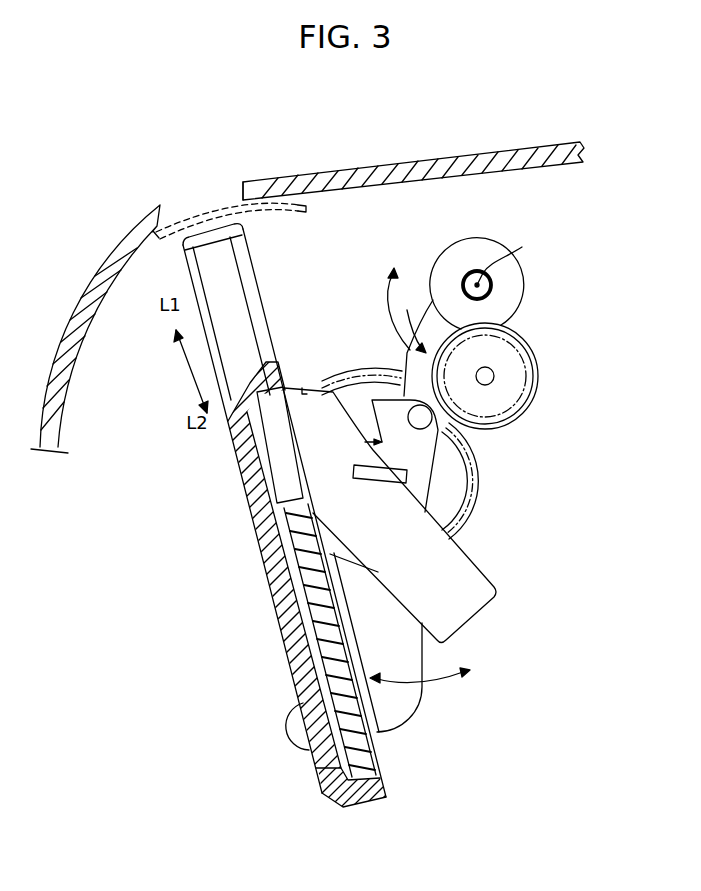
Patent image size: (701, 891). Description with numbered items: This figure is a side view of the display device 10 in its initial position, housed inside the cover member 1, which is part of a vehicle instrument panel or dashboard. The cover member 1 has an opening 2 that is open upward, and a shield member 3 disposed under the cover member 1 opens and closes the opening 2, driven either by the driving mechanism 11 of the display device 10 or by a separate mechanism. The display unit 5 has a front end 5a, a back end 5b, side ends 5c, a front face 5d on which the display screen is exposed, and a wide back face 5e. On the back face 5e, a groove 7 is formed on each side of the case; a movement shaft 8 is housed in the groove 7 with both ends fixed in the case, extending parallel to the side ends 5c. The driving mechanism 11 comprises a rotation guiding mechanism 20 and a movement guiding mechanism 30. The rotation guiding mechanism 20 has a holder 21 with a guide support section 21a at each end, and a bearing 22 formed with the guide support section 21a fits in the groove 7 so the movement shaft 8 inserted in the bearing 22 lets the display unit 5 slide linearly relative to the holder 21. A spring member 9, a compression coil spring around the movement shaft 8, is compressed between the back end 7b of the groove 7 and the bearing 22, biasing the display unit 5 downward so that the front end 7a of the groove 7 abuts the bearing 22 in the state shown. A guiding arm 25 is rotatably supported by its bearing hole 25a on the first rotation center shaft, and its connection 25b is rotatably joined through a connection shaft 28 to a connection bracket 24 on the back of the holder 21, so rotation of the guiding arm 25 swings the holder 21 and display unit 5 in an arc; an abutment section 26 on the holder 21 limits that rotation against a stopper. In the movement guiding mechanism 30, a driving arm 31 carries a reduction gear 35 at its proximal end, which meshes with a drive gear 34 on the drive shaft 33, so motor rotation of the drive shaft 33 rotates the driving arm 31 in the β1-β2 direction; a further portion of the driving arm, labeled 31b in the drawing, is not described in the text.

The cover member 1 is at (457, 162).
The opening 2 is at (243, 184).
The shield member 3 is at (302, 213).
The display unit 5 is at (268, 506).
The front end 5a is at (208, 230).
The back end 5b is at (369, 800).
The side ends 5c is at (266, 348).
The front face 5d is at (190, 285).
The back face 5e is at (262, 273).
The groove 7 is at (350, 585).
The front end of the groove 7a is at (245, 410).
The back end of the groove 7b is at (340, 775).
The movement shaft 8 is at (283, 558).
The spring member 9 is at (297, 620).
The display device 10 is at (444, 488).
The driving mechanism 11 is at (521, 388).
The rotation guiding mechanism 20 is at (377, 347).
The holder 21 is at (409, 492).
The guide support section 21a is at (308, 410).
The bearing 22 is at (283, 483).
The connection bracket 24 is at (426, 490).
The guiding arm 25 is at (495, 265).
The bearing hole 25a is at (492, 292).
The connection 25b is at (412, 382).
The abutment section 26 is at (365, 480).
The connection shaft 28 is at (428, 421).
The movement guiding mechanism 30 is at (366, 664).
The driving arm 31 is at (373, 732).
The bracket projection 31b is at (290, 730).
The drive shaft 33 is at (495, 375).
The drive gear 34 is at (527, 413).
The reduction gear 35 is at (481, 480).